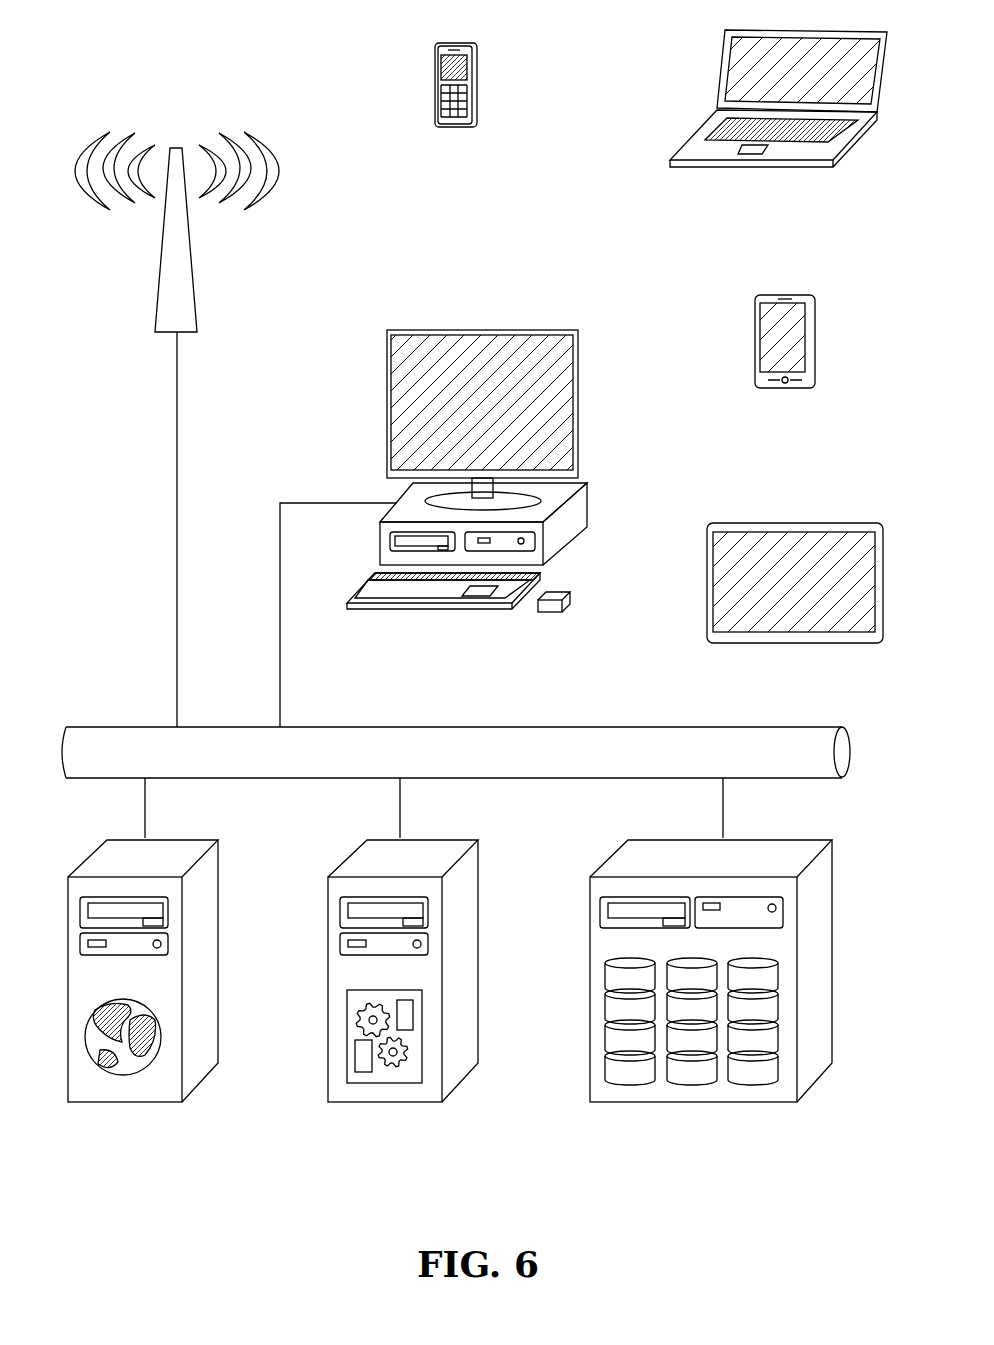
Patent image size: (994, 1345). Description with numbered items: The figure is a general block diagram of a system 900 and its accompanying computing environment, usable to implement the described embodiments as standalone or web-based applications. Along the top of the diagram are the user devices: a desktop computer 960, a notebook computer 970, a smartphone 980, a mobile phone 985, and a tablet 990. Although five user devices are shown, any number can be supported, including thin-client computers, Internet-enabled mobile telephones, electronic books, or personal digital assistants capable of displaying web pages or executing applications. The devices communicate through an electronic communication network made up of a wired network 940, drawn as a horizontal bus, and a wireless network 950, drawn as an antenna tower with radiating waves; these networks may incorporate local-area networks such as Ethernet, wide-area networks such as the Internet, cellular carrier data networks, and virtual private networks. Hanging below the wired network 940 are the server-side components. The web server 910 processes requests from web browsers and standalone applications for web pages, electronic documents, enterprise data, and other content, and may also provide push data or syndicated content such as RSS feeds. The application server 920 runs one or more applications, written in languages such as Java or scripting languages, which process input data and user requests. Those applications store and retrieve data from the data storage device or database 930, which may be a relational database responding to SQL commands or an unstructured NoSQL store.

The system 900 is at (130, 50).
The web server 910 is at (130, 1092).
The application server 920 is at (385, 1092).
The data storage device or database 930 is at (683, 1090).
The wired network 940 is at (456, 752).
The wireless network 950 is at (202, 241).
The desktop computer 960 is at (468, 622).
The notebook computer 970 is at (787, 203).
The smartphone 980 is at (787, 398).
The mobile phone 985 is at (458, 143).
The tablet 990 is at (788, 637).